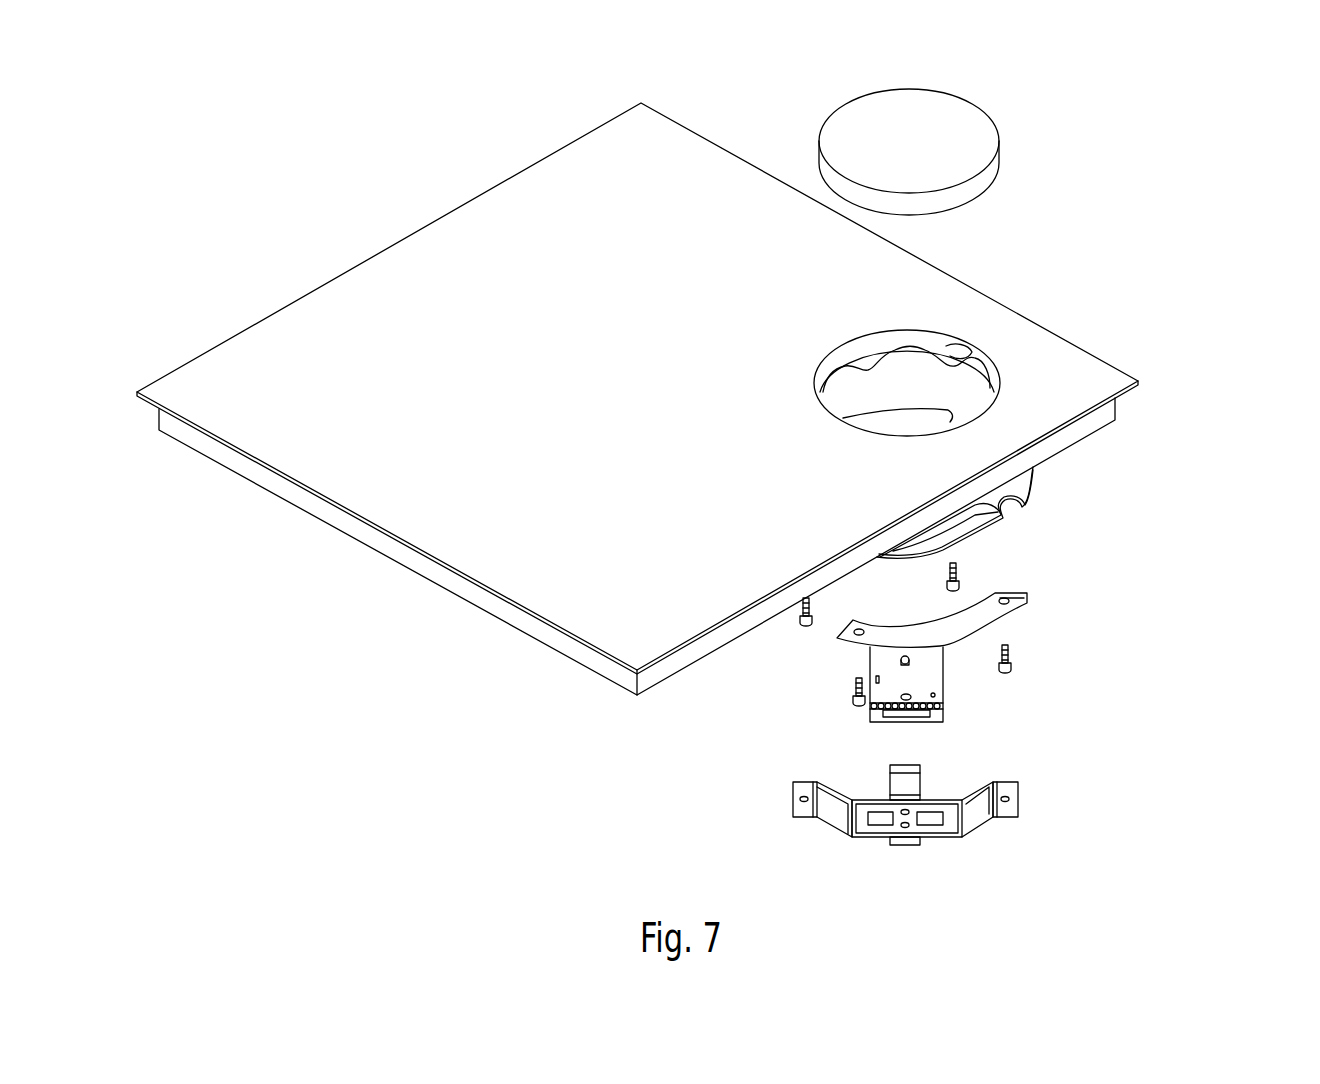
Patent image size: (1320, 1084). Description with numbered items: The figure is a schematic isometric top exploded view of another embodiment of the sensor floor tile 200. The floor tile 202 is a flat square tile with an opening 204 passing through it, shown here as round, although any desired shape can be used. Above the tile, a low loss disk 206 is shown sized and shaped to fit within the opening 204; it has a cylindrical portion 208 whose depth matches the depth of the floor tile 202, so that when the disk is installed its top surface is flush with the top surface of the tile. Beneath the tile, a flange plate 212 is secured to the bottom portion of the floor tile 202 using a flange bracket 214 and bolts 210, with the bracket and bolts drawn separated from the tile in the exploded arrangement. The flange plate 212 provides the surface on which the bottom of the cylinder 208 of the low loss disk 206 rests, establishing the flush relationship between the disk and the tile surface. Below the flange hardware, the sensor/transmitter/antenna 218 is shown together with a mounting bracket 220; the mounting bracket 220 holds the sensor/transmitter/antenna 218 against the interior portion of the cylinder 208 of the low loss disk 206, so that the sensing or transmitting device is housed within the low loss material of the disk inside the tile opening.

The sensor floor tile 200 is at (262, 159).
The floor tile 202 is at (270, 312).
The opening 204 is at (821, 406).
The low loss disk 206 is at (1040, 97).
The cylindrical portion 208 is at (998, 170).
The bolts 210 is at (1058, 652).
The flange plate 212 is at (1036, 480).
The flange bracket 214 is at (1030, 597).
The sensor/transmitter/antenna 218 is at (945, 707).
The mounting bracket 220 is at (1018, 800).